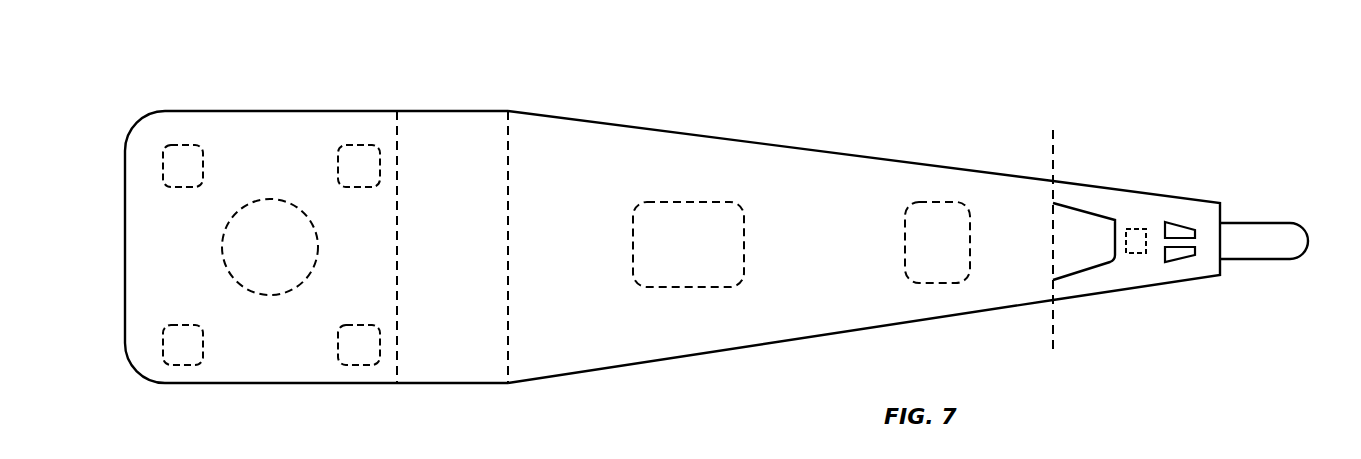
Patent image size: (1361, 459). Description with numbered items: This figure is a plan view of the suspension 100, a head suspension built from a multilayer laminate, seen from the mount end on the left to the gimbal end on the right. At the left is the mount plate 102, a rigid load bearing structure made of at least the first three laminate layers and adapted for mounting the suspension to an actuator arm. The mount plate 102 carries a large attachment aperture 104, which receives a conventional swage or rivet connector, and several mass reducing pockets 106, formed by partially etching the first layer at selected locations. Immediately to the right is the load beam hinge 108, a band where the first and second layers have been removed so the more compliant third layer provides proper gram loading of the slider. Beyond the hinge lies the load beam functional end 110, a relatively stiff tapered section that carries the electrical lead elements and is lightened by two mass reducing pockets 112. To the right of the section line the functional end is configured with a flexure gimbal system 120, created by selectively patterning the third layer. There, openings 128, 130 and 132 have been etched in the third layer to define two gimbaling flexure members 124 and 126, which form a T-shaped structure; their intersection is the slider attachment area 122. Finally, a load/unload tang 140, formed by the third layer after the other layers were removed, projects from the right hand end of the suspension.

The suspension 100 is at (167, 92).
The mount plate 102 is at (261, 416).
The attachment aperture 104 is at (270, 247).
The mass reducing pockets 106 is at (338, 166).
The load beam hinge 108 is at (477, 360).
The load beam functional end 110 is at (746, 386).
The mass reducing pockets 112 is at (801, 244).
The flexure gimbal system 120 is at (1138, 384).
The slider attachment area 122 is at (1137, 255).
The gimbaling flexure member 124 is at (1152, 212).
The gimbaling flexure member 126 is at (1192, 234).
The opening 128 is at (1098, 260).
The opening 130 is at (1172, 222).
The opening 132 is at (1187, 256).
The load/unload tang 140 is at (1252, 248).